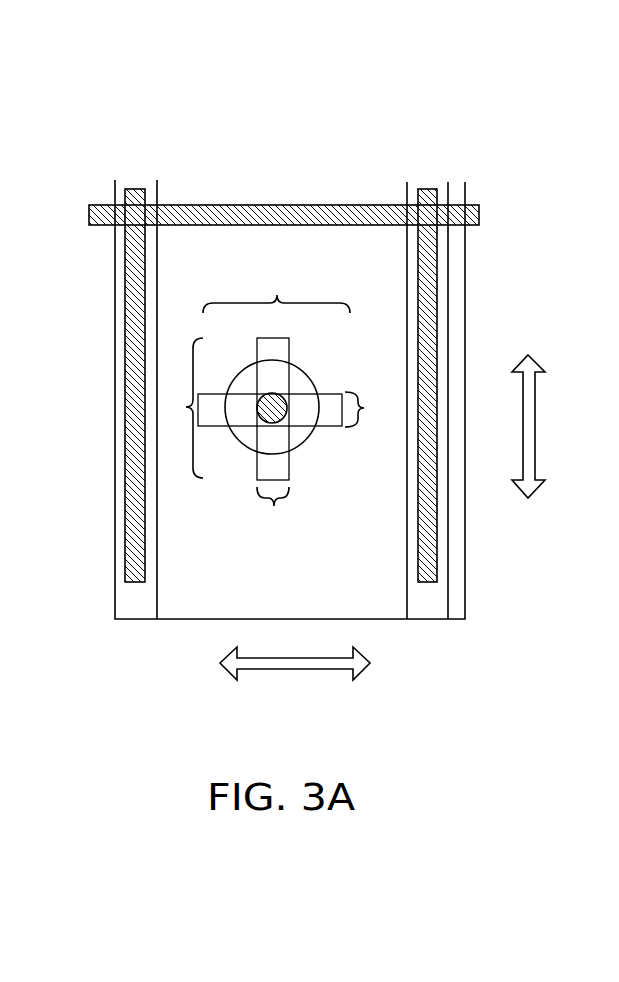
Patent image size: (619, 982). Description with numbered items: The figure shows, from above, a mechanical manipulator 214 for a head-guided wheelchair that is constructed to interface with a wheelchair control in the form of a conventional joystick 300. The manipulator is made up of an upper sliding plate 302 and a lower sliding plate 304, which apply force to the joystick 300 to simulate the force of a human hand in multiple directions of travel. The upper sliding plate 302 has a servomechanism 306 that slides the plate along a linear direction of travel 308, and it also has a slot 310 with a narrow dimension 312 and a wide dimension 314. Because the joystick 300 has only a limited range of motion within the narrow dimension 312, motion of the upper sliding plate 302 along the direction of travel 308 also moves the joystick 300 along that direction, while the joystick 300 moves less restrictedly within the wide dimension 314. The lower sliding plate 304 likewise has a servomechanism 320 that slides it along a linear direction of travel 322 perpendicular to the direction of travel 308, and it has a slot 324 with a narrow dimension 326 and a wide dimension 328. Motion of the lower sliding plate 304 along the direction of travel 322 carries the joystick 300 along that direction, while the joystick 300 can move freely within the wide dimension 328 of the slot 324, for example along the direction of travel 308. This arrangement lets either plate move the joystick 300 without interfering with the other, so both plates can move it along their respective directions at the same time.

The mechanical manipulator 214 is at (343, 168).
The joystick 300 is at (286, 400).
The upper sliding plate 302 is at (465, 315).
The lower sliding plate 304 is at (144, 597).
The servomechanism 306 is at (480, 211).
The linear direction of travel 308 is at (297, 664).
The slot 310 is at (280, 463).
The narrow dimension 312 is at (278, 515).
The wide dimension 314 is at (187, 407).
The servomechanism 320 is at (142, 189).
The linear direction of travel 322 is at (528, 438).
The slot 324 is at (330, 398).
The narrow dimension 326 is at (364, 408).
The wide dimension 328 is at (276, 291).